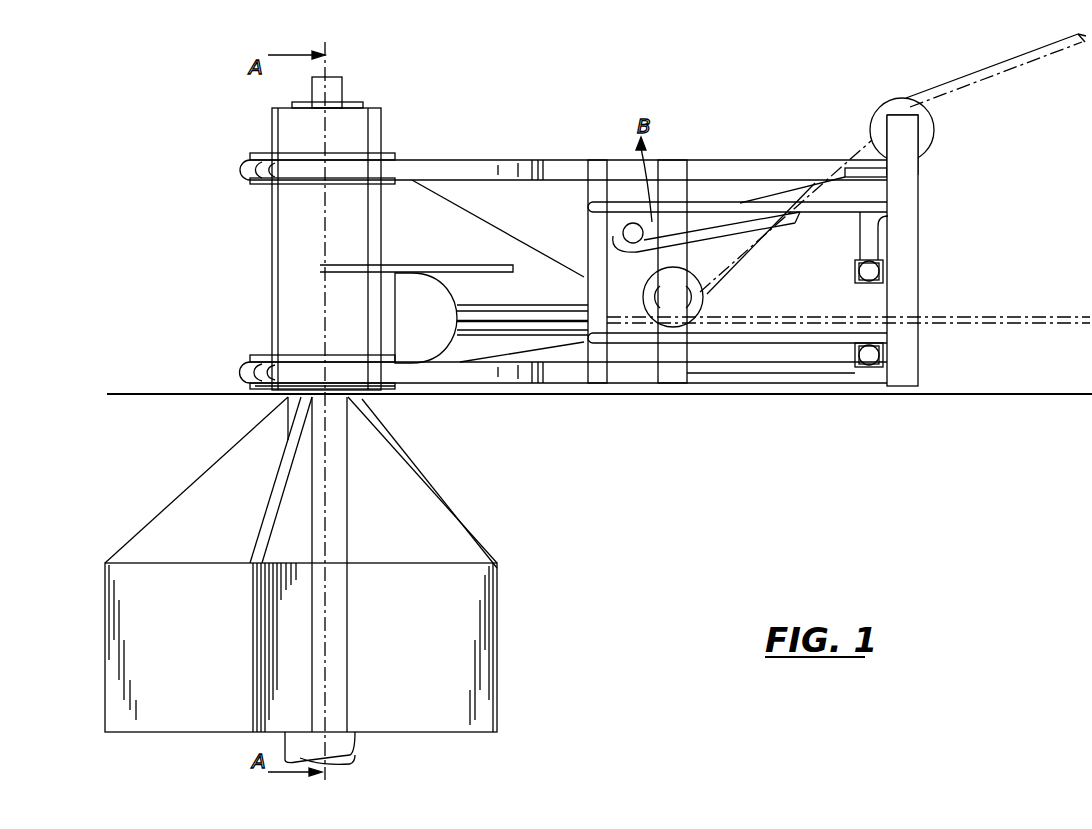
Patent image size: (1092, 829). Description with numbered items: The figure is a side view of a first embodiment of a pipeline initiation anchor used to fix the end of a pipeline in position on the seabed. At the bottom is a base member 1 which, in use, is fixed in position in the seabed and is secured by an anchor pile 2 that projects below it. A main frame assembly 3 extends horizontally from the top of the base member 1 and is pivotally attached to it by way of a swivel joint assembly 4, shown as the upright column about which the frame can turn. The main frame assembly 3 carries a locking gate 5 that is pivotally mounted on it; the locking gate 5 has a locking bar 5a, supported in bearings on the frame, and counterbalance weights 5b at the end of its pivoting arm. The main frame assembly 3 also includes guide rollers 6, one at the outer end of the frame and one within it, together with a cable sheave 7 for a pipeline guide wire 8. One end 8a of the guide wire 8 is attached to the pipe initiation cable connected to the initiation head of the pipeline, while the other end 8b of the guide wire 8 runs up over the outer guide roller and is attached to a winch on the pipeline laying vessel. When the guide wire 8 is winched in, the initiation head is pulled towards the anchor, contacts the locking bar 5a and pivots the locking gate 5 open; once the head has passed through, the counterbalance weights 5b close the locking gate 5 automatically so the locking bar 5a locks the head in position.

The base member 1 is at (450, 652).
The anchor pile 2 is at (352, 750).
The main frame assembly 3 is at (535, 158).
The swivel joint assembly 4 is at (255, 236).
The locking gate 5 is at (860, 240).
The locking bar 5a is at (855, 275).
The counterbalance weights 5b is at (621, 232).
The guide rollers 6 is at (648, 285).
The cable sheave 7 is at (520, 316).
The pipeline guide wire 8 is at (970, 78).
The end of guide wire 8a is at (1085, 315).
The other end of guide wire 8b is at (1060, 33).